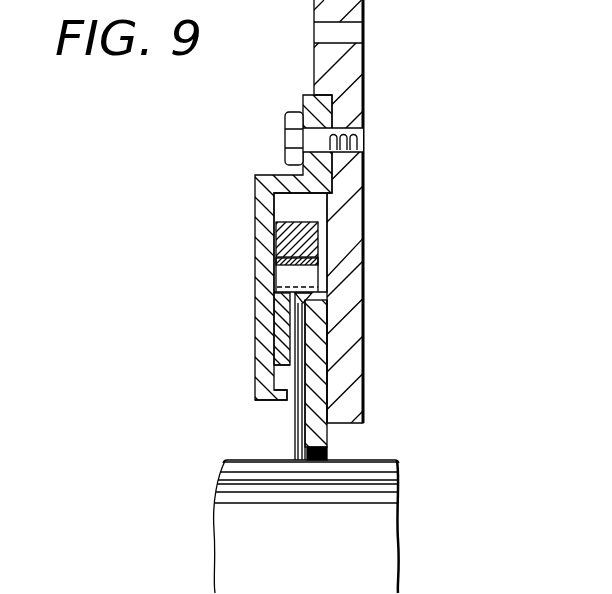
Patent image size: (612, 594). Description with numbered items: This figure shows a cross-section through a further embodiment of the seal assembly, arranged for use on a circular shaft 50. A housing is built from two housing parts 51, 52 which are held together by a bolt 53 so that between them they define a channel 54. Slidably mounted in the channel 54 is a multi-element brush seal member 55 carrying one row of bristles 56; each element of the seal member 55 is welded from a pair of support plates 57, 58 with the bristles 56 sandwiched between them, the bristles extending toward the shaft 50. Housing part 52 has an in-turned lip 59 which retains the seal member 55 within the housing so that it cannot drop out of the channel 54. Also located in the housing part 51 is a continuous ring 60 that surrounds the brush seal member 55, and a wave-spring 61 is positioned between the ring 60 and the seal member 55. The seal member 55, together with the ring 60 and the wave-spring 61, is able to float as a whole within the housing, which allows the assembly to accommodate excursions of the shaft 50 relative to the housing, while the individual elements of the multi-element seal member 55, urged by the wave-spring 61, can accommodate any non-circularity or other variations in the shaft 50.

The circular shaft 50 is at (360, 512).
The housing part 51 is at (352, 80).
The housing part 52 is at (257, 242).
The bolt 53 is at (285, 137).
The channel 54 is at (307, 207).
The multi-element brush seal member 55 is at (327, 352).
The bristles 56 is at (293, 435).
The support plate 57 is at (285, 335).
The support plate 58 is at (318, 405).
The in-turned lip 59 is at (282, 400).
The continuous ring 60 is at (275, 225).
The wave-spring 61 is at (277, 268).